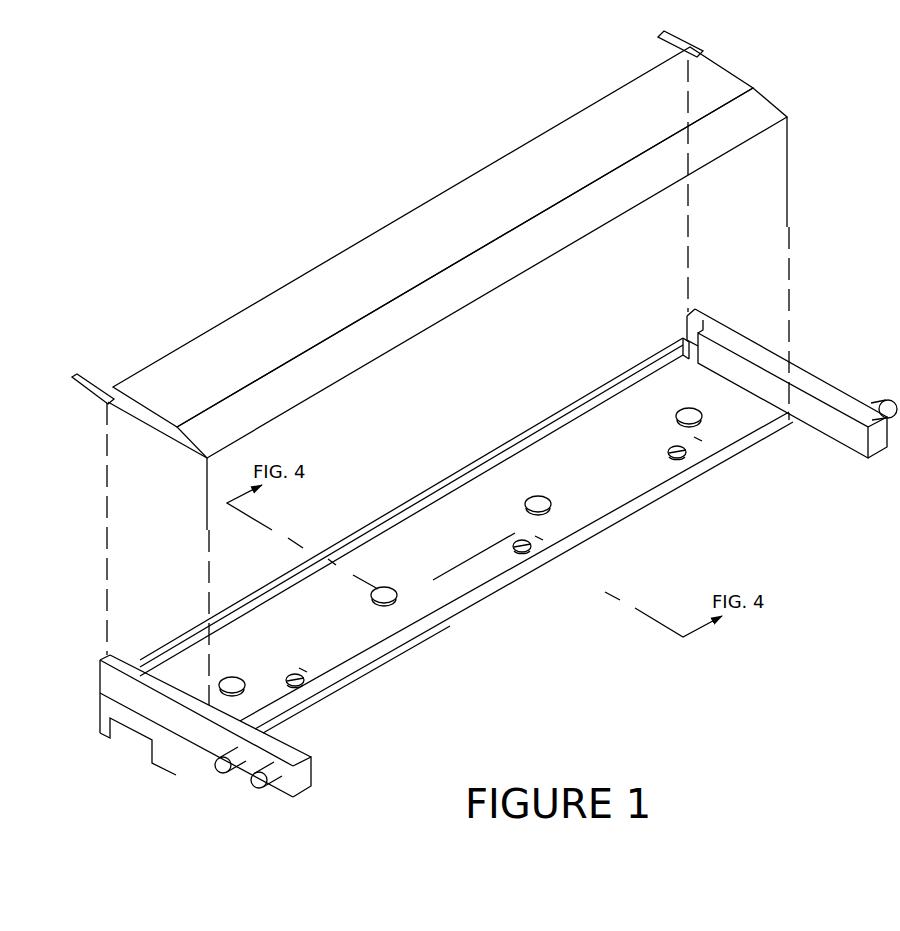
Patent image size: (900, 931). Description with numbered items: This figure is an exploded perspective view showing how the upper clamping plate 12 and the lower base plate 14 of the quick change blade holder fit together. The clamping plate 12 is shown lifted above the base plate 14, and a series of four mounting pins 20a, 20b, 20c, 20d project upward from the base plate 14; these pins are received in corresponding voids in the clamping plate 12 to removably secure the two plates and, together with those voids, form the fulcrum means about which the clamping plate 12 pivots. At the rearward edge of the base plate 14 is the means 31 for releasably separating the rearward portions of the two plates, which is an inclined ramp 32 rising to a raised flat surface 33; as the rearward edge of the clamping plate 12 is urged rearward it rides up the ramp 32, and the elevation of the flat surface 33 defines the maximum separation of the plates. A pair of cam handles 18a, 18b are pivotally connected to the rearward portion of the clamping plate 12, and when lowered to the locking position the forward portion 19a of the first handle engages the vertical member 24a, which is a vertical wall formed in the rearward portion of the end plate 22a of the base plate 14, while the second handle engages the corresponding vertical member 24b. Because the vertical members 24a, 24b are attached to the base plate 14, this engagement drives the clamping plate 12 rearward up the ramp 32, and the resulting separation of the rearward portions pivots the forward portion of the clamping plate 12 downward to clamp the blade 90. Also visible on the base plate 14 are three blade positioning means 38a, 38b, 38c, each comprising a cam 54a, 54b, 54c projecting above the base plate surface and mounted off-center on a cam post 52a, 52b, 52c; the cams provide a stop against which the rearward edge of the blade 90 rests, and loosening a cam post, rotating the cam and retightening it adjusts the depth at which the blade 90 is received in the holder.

The clamping plate 12 is at (433, 193).
The base plate 14 is at (131, 734).
The cam handle 18a is at (88, 374).
The cam handle 18b is at (650, 37).
The forward portion of cam handle 19a is at (118, 405).
The mounting pin 20a is at (253, 700).
The mounting pin 20b is at (405, 608).
The mounting pin 20c is at (559, 517).
The mounting pin 20d is at (710, 421).
The end plate 22a is at (205, 736).
The vertical member 24a is at (131, 658).
The vertical member 24b is at (686, 325).
The means for releasably separating the rearward portions of the two plates 31 is at (352, 528).
The inclined ramp 32 is at (435, 498).
The raised flat surface 33 is at (250, 596).
The blade positioning means 38a is at (304, 667).
The blade positioning means 38b is at (540, 537).
The blade positioning means 38c is at (701, 439).
The cam post 52a is at (304, 676).
The cam post 52b is at (526, 553).
The cam post 52c is at (689, 452).
The cam 54a is at (293, 689).
The cam 54b is at (513, 548).
The cam 54c is at (678, 462).
The blade 90 is at (664, 485).